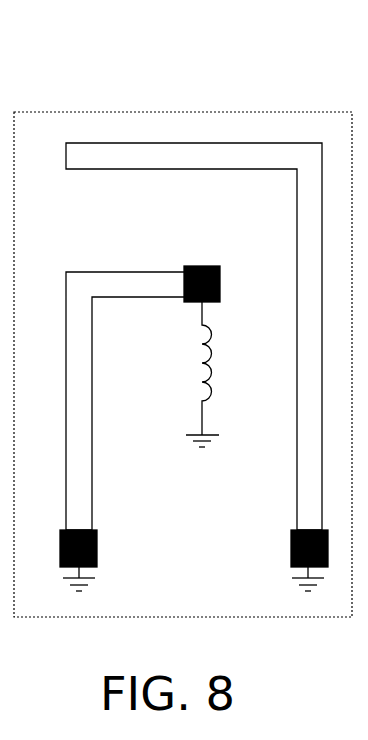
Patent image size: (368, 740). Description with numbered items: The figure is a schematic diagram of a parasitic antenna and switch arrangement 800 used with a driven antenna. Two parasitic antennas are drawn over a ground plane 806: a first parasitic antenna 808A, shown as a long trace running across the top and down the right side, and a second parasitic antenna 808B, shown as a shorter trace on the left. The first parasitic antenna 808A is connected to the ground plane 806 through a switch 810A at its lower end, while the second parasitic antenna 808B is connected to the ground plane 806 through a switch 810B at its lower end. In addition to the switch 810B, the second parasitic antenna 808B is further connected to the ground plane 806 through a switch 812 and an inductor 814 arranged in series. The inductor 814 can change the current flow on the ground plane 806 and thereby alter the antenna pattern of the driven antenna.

The parasitic antenna and switch arrangement 800 is at (103, 75).
The ground plane 806 is at (212, 593).
The first parasitic antenna 808A is at (92, 169).
The second parasitic antenna 808B is at (73, 272).
The switch 810A is at (291, 557).
The switch 810B is at (97, 558).
The switch 812 is at (257, 222).
The inductor 814 is at (186, 349).